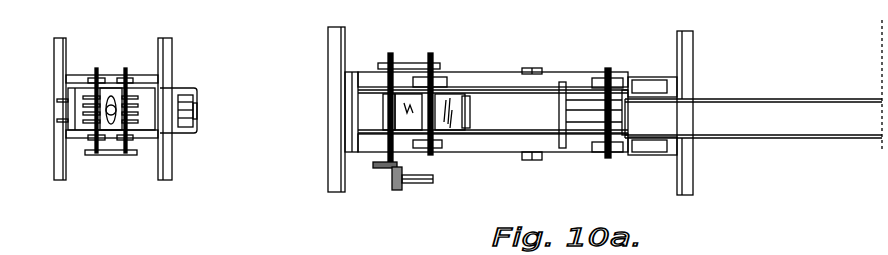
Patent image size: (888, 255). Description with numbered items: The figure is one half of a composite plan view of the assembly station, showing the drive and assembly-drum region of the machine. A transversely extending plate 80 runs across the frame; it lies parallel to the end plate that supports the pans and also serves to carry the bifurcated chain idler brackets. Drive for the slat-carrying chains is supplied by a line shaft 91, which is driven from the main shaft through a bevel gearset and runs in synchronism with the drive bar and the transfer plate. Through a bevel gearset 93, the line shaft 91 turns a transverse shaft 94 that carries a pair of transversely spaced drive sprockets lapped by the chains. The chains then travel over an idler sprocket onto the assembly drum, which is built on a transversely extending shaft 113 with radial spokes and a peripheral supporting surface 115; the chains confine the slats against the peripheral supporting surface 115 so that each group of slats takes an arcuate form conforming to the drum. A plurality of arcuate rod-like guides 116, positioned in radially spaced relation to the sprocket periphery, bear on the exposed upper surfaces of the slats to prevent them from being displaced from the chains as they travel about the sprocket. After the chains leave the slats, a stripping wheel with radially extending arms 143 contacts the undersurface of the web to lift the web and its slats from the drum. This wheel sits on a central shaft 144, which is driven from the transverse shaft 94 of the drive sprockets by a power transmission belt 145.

The transversely extending plate 80 is at (740, 110).
The line shaft 91 is at (422, 184).
The bevel gearset 93 is at (394, 178).
The transverse shaft 94 is at (392, 59).
The transversely extending shaft 113 is at (532, 162).
The peripheral supporting surface 115 is at (495, 128).
The arcuate rod-like guides 116 is at (601, 123).
The radially extending arms 143 is at (463, 124).
The central shaft 144 is at (434, 58).
The power transmission belt 145 is at (412, 64).